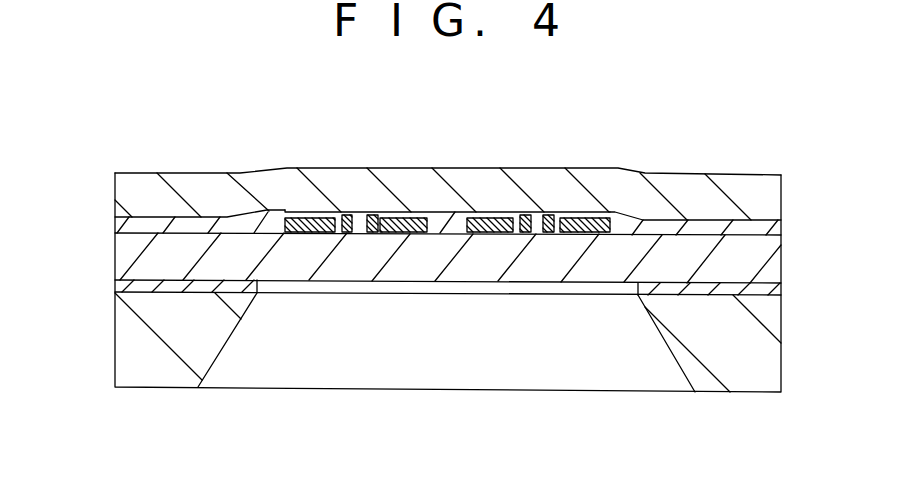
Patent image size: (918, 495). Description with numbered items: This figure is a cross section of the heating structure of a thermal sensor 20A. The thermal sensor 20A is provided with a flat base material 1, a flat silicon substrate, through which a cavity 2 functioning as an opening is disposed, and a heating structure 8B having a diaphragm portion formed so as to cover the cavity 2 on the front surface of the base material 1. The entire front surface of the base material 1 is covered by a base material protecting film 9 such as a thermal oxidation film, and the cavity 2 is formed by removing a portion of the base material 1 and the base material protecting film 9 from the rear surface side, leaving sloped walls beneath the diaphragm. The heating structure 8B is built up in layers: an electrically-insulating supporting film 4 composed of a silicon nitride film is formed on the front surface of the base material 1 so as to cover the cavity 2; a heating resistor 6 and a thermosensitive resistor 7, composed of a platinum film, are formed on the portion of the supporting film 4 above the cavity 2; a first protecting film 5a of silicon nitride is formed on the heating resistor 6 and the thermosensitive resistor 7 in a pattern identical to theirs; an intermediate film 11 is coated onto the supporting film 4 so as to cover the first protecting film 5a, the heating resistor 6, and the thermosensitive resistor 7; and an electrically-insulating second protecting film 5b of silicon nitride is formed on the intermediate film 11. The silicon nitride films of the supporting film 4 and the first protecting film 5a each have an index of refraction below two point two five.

The base material 1 is at (765, 351).
The cavity 2 is at (642, 368).
The supporting film 4 is at (775, 266).
The first protecting film 5a is at (590, 222).
The second protecting film 5b is at (773, 199).
The heating resistor 6 is at (583, 232).
The thermosensitive resistor 7 is at (543, 232).
The heating structure 8B is at (643, 141).
The base material protecting film 9 is at (781, 291).
The intermediate film 11 is at (775, 231).
The thermal sensor 20A is at (178, 123).